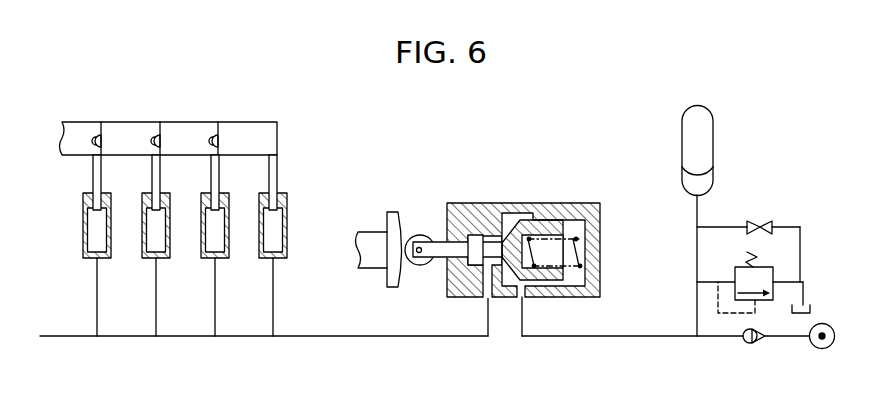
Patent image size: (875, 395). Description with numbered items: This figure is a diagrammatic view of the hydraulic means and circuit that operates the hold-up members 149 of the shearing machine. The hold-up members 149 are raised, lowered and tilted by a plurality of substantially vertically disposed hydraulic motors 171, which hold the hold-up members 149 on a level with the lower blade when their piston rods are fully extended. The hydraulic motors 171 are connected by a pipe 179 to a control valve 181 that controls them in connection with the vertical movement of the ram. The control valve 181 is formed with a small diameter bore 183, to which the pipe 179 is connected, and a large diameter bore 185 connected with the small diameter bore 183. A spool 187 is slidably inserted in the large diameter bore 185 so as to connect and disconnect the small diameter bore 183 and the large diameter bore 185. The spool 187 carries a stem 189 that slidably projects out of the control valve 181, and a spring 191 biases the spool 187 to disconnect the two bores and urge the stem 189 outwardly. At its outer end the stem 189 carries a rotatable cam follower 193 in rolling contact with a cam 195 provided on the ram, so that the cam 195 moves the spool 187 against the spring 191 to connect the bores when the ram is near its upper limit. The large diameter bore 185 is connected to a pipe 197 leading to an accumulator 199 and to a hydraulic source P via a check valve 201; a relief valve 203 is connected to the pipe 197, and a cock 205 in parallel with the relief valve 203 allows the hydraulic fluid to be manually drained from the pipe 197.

The hold-up member 149 is at (122, 133).
The hydraulic motor 171 is at (142, 258).
The pipe 179 is at (345, 335).
The control valve 181 is at (500, 200).
The small diameter bore 183 is at (485, 237).
The large diameter bore 185 is at (532, 215).
The spool 187 is at (558, 222).
The stem 189 is at (437, 257).
The spring 191 is at (573, 235).
The cam follower 193 is at (420, 235).
The cam 195 is at (388, 212).
The pipe 197 is at (663, 338).
The accumulator 199 is at (708, 121).
The check valve 201 is at (753, 343).
The relief valve 203 is at (773, 267).
The cock 205 is at (772, 222).
The hydraulic source P is at (823, 324).